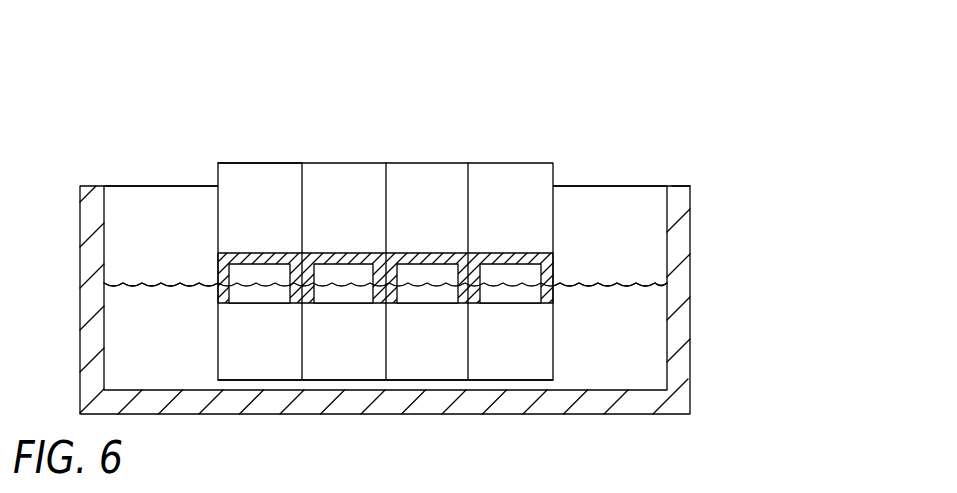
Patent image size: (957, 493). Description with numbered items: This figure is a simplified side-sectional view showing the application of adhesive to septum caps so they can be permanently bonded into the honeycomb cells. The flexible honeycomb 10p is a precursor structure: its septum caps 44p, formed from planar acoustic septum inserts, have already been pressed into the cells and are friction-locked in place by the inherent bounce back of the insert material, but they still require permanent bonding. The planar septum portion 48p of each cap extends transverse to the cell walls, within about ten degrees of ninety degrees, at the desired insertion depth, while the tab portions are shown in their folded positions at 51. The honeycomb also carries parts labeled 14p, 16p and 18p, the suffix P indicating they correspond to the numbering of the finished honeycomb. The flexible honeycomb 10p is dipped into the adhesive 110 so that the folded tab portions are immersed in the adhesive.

The flexible honeycomb 10p is at (385, 244).
The housing 14p is at (537, 163).
The housing bottom 16p is at (258, 380).
The housing upper portion 18p is at (258, 183).
The septum cap 44p is at (423, 253).
The planar septum portion 48p is at (341, 253).
The tab portions 51 is at (218, 273).
The adhesive 110 is at (630, 323).